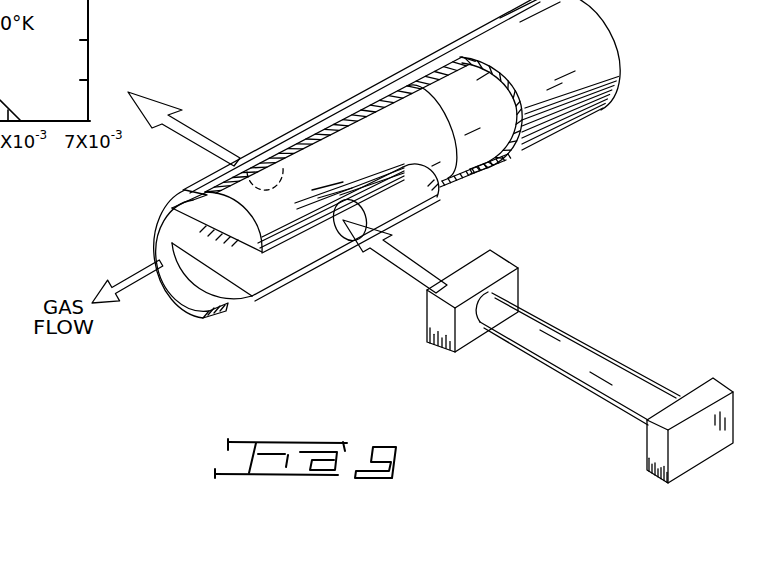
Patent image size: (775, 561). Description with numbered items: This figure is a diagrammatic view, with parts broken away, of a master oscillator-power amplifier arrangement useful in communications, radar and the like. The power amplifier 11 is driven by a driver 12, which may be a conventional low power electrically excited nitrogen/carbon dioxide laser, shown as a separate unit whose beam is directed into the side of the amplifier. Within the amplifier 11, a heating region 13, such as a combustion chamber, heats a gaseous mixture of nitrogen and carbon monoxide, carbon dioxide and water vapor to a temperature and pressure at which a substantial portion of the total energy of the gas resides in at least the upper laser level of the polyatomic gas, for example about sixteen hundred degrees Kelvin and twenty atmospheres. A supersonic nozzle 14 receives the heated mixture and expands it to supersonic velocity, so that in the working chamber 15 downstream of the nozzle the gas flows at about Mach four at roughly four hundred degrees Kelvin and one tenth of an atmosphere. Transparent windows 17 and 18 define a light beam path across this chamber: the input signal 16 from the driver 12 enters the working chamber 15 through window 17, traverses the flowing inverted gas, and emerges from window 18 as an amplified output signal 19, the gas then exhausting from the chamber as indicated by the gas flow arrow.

The power amplifier 11 is at (487, 182).
The driver 12 is at (547, 313).
The heating region 13 is at (473, 119).
The supersonic nozzle 14 is at (447, 197).
The working chamber 15 is at (235, 273).
The input signal 16 is at (410, 258).
The transparent window 17 is at (370, 210).
The transparent window 18 is at (284, 172).
The amplified output signal 19 is at (182, 132).